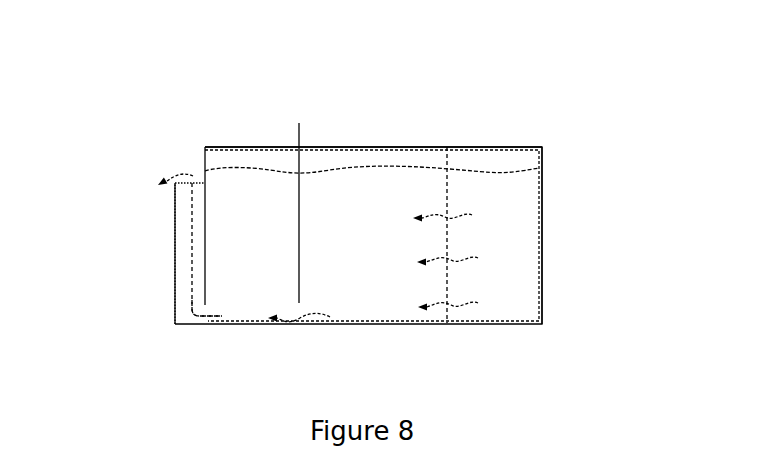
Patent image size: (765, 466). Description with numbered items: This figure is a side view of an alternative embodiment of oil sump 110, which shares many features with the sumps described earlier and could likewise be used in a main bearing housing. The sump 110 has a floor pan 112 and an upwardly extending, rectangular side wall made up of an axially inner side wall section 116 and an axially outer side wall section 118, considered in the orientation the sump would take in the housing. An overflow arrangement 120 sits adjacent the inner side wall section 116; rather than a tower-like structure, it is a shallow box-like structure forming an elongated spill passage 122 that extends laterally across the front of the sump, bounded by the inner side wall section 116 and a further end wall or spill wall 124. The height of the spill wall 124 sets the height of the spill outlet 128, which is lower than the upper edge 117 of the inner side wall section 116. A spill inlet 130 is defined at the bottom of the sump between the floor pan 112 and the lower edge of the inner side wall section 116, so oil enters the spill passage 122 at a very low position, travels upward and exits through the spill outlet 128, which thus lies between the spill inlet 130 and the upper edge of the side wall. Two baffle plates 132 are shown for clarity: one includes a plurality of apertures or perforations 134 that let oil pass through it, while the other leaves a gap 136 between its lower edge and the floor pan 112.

The sump 110 is at (527, 56).
The floor pan 112 is at (378, 322).
The inner side wall section 116 is at (206, 167).
The upper edge 117 is at (205, 147).
The outer side wall section 118 is at (547, 155).
The overflow arrangement 120 is at (141, 253).
The spill passage 122 is at (182, 282).
The spill wall 124 is at (175, 312).
The spill outlet 128 is at (200, 182).
The spill inlet 130 is at (210, 312).
The baffle plates 132 is at (447, 147).
The apertures or perforations 134 is at (450, 292).
The gap 136 is at (319, 299).